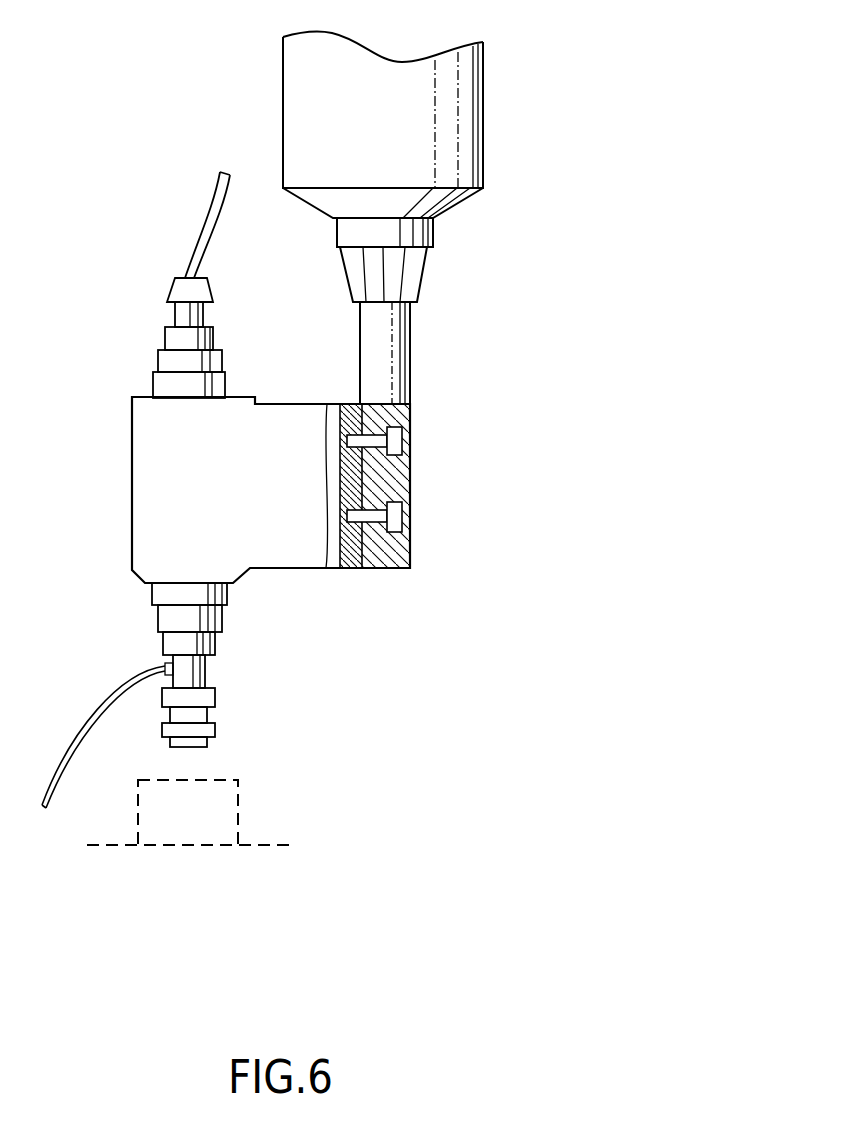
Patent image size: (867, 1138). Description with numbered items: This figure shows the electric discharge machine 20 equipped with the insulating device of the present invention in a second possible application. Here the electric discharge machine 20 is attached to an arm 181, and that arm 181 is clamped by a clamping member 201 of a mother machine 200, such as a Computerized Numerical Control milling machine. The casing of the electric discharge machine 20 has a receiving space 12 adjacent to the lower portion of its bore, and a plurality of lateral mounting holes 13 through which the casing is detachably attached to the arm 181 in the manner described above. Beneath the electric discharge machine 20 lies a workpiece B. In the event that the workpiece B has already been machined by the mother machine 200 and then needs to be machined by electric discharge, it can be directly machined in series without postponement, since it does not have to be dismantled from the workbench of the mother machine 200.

The mother machine 200 is at (483, 120).
The clamping member 201 is at (410, 275).
The arm 181 is at (398, 362).
The receiving space 12 is at (330, 473).
The lateral mounting holes 13 is at (353, 430).
The electric discharge machine 20 is at (138, 346).
The workpiece B is at (230, 815).